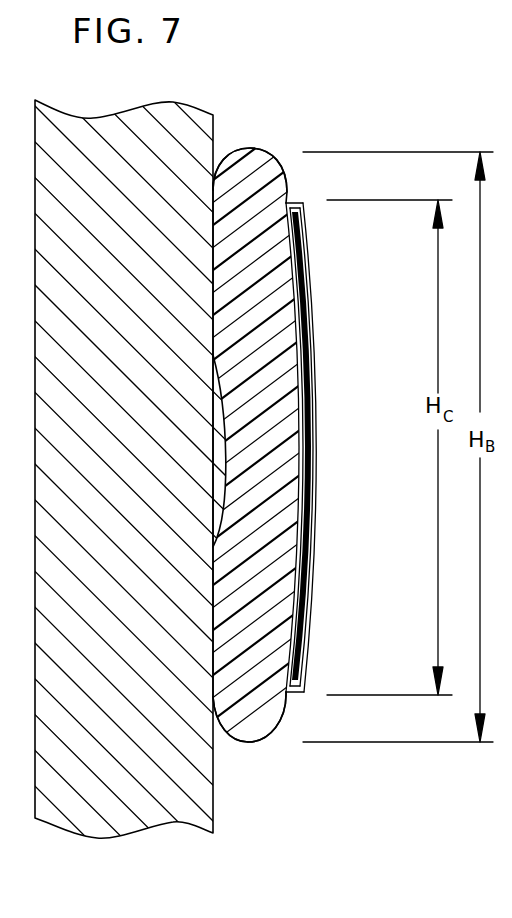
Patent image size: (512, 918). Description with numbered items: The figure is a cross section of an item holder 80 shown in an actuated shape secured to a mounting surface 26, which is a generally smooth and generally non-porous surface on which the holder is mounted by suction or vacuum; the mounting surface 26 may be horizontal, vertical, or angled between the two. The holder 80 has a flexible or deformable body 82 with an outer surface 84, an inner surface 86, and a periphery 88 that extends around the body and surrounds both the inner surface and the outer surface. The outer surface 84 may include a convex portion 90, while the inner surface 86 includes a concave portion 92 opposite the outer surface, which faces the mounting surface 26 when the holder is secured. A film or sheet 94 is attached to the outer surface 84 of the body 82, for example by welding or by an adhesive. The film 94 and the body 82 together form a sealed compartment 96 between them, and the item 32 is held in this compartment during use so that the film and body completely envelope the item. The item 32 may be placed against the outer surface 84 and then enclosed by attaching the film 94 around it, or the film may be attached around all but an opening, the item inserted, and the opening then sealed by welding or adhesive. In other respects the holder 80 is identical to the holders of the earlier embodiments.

The mounting surface 26 is at (225, 812).
The item 32 is at (305, 518).
The item holder 80 is at (286, 122).
The flexible or deformable body 82 is at (262, 742).
The outer surface 84 is at (290, 718).
The inner surface 86 is at (210, 660).
The periphery 88 is at (240, 148).
The convex portion 90 is at (303, 362).
The concave portion 92 is at (215, 433).
The film or sheet 94 is at (310, 316).
The sealed compartment 96 is at (292, 258).